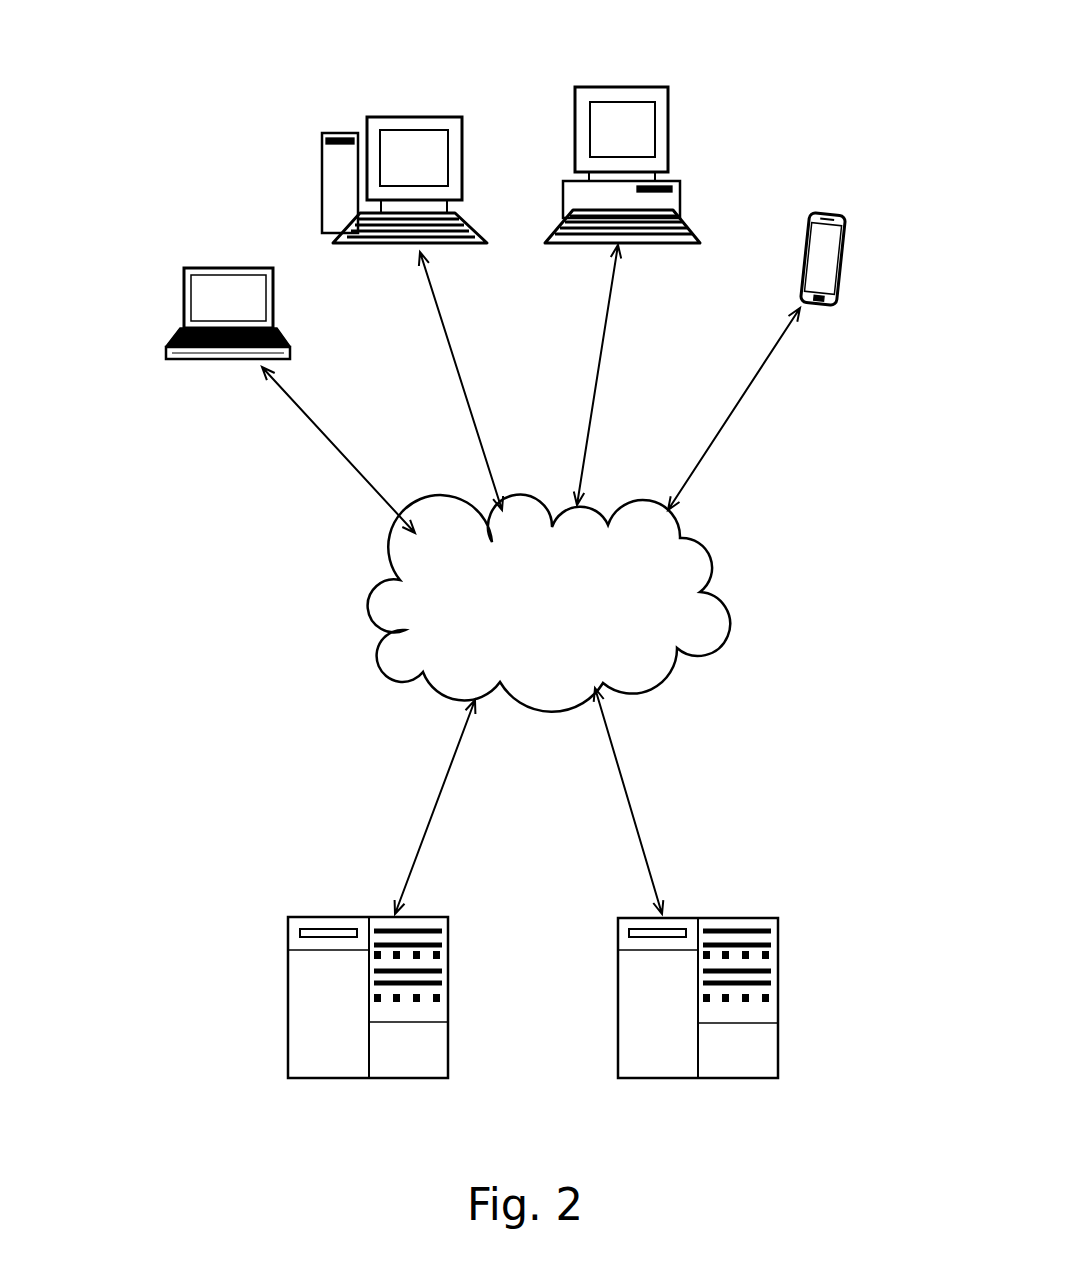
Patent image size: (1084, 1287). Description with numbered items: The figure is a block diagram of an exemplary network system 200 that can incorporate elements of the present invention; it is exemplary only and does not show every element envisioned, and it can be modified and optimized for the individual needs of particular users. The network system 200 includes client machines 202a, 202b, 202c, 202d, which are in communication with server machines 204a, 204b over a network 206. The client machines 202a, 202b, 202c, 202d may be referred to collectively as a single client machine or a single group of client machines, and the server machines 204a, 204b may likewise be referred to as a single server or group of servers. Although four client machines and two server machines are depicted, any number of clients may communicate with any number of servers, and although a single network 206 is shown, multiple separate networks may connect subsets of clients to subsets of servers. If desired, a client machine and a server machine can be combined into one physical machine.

The network system 200 is at (800, 52).
The client machine 202a is at (183, 273).
The client machine 202b is at (322, 156).
The client machine 202c is at (575, 120).
The client machine 202d is at (847, 232).
The server machine 204a is at (288, 970).
The server machine 204b is at (778, 972).
The network 206 is at (720, 587).